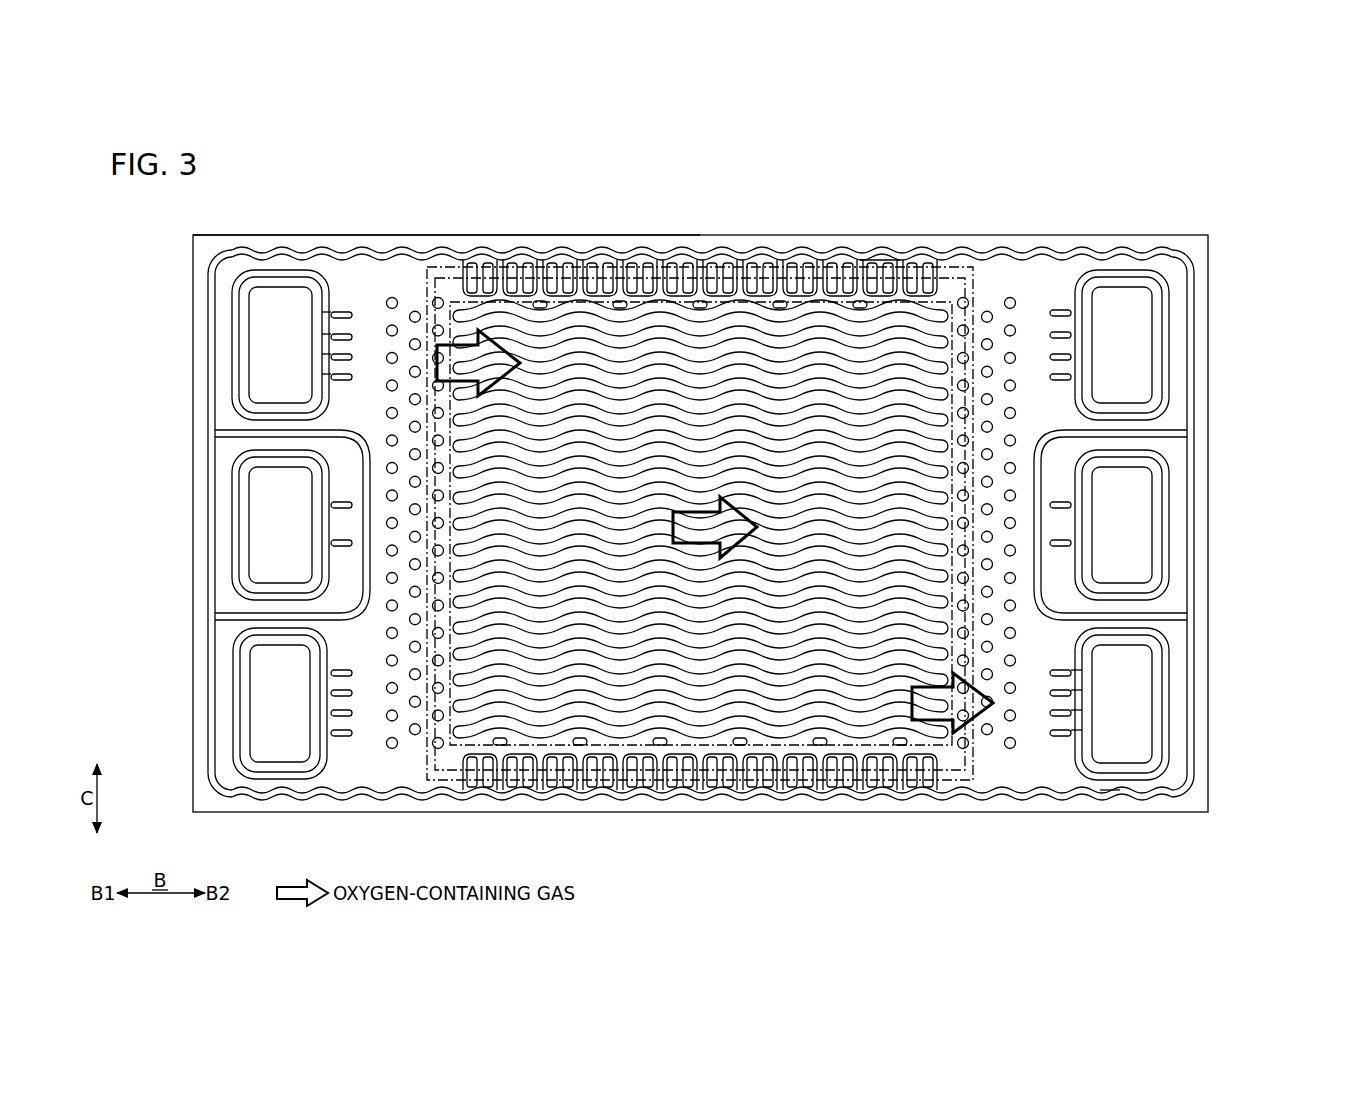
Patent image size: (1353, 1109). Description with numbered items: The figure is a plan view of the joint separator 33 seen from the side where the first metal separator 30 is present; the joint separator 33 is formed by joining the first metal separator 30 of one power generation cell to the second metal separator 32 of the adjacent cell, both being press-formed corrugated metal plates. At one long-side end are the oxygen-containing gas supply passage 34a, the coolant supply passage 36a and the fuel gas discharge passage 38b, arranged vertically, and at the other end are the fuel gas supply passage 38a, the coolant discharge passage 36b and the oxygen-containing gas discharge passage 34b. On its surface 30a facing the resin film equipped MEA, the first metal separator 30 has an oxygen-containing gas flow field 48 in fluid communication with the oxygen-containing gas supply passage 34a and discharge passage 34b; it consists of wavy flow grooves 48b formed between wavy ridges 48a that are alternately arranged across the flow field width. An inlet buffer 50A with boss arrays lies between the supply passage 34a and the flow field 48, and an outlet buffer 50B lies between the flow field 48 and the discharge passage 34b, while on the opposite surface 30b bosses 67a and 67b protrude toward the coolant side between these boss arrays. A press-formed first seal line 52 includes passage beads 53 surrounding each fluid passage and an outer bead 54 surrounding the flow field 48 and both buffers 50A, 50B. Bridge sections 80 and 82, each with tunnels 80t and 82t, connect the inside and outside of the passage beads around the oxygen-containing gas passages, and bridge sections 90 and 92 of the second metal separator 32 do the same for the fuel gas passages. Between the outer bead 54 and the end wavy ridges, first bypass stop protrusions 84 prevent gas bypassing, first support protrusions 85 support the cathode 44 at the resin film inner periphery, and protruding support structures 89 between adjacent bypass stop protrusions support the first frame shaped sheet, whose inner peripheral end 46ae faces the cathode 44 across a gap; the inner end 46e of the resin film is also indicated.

The first metal separator 30 is at (562, 233).
The surface 30a is at (480, 248).
The surface 30b is at (522, 255).
The second metal separator 32 is at (580, 233).
The joint separator 33 is at (1183, 164).
The oxygen-containing gas supply passage 34a is at (262, 312).
The oxygen-containing gas discharge passage 34b is at (1138, 690).
The coolant supply passage 36a is at (262, 502).
The coolant discharge passage 36b is at (1140, 502).
The fuel gas supply passage 38a is at (1135, 330).
The fuel gas discharge passage 38b is at (262, 683).
The cathode 44 is at (435, 266).
The inner peripheral end of the first frame shaped sheet 46ae is at (948, 300).
The inner end of the resin film 46e is at (717, 793).
The oxygen-containing gas flow field 48 is at (701, 507).
The wavy ridge 48a is at (637, 330).
The wavy flow groove 48b is at (668, 312).
The inlet buffer 50A is at (437, 583).
The outlet buffer 50B is at (965, 608).
The first seal line 52 is at (1220, 858).
The passage bead 53 is at (236, 330).
The outer bead 54 is at (1108, 798).
The boss 67a is at (415, 316).
The boss 67b is at (987, 316).
The bridge section 80 is at (352, 286).
The tunnel 80t is at (349, 335).
The bridge section 82 is at (1048, 746).
The tunnel 82t is at (1085, 725).
The first bypass stop protrusion 84 is at (763, 277).
The first support protrusion 85 is at (706, 300).
The protruding support structure 89 is at (872, 262).
The bridge section 90 is at (1060, 284).
The bridge section 92 is at (344, 746).